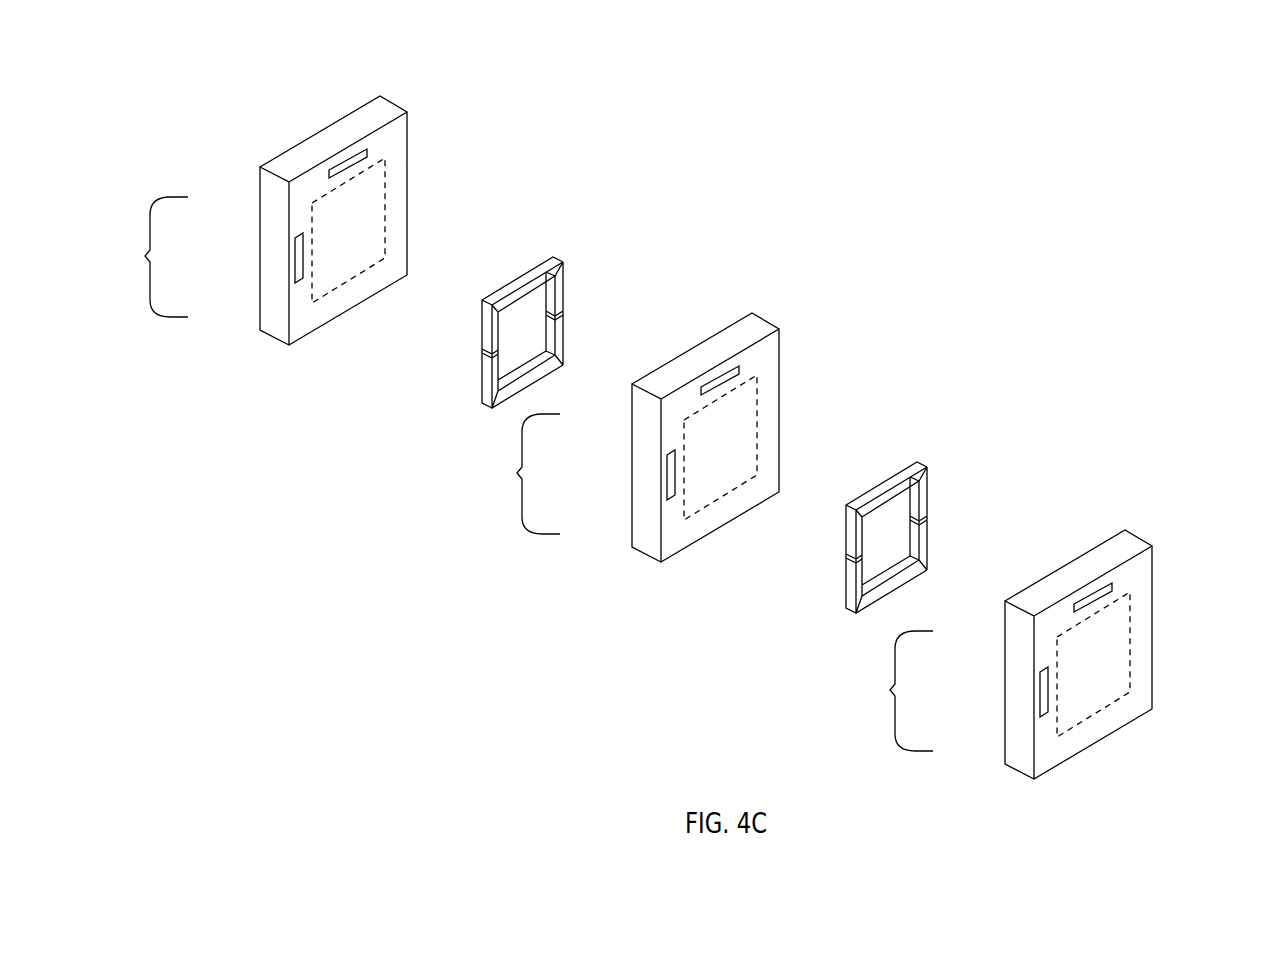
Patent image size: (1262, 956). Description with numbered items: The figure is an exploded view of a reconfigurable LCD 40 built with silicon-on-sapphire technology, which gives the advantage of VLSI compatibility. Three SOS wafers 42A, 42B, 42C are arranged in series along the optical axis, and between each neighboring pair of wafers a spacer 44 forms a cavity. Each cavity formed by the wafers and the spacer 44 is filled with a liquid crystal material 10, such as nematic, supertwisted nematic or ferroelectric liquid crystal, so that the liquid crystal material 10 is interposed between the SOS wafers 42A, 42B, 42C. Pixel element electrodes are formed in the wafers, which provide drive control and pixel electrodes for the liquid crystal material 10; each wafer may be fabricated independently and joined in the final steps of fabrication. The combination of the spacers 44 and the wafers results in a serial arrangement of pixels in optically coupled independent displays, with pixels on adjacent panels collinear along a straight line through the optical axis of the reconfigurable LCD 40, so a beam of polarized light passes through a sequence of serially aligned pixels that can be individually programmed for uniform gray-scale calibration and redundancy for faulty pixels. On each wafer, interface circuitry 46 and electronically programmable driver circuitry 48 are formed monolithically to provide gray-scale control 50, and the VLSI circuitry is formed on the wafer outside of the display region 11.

The reconfigurable LCD 40 is at (226, 90).
The SOS wafer 42A is at (387, 142).
The SOS wafer 42B is at (738, 437).
The SOS wafer 42C is at (1111, 654).
The spacer 44 is at (565, 334).
The liquid crystal material 10 is at (481, 334).
The interface circuitry 46 is at (329, 178).
The electronically programmable driver circuitry 48 is at (296, 257).
The display region 11 is at (323, 268).
The gray-scale control 50 is at (528, 474).